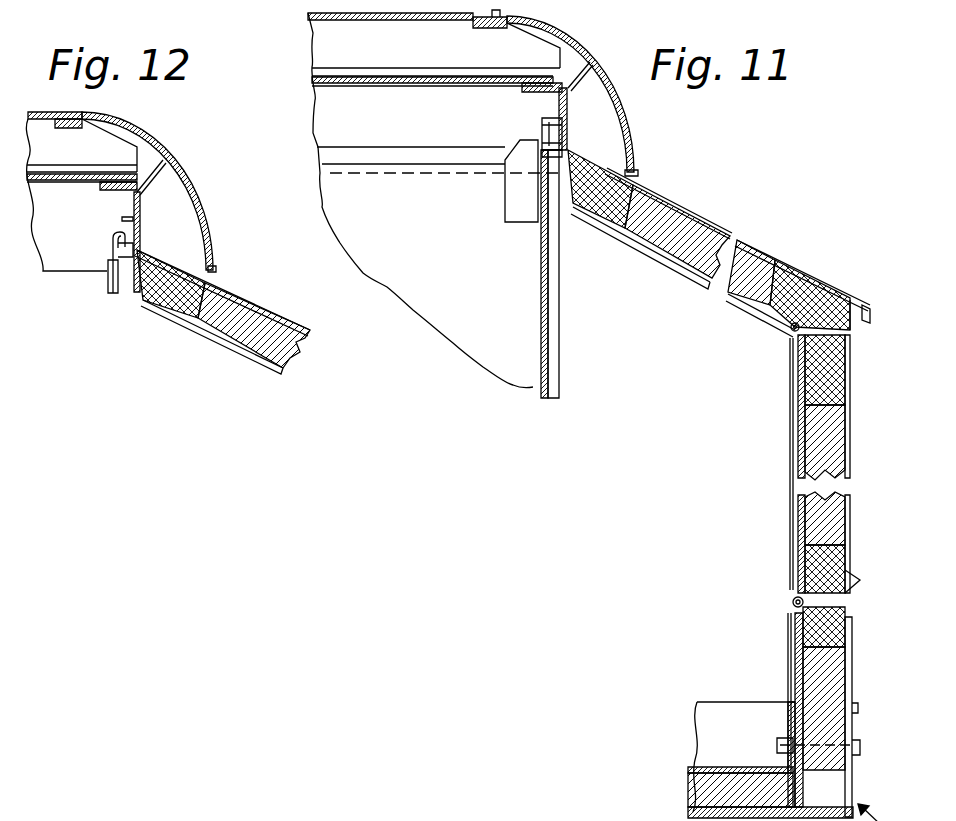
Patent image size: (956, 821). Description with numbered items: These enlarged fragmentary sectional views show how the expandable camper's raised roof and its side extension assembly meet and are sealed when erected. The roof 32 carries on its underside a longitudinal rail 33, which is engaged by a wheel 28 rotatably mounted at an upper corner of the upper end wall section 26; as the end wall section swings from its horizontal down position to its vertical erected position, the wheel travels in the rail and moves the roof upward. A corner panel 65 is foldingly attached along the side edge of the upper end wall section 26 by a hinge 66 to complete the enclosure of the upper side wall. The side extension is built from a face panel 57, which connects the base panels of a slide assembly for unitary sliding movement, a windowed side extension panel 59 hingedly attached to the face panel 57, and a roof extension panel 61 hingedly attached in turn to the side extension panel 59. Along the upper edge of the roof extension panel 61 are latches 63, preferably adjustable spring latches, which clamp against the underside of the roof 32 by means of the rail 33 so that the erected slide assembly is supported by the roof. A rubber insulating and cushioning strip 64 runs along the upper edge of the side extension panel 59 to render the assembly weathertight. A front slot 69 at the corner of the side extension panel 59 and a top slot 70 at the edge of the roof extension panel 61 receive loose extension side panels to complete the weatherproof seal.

In FIG. 11, the upper end wall section 26 is at (443, 313).
In FIG. 11, the wheel 28 is at (564, 127).
In FIG. 12, the roof 32 is at (56, 112).
In FIG. 11, the roof 32 is at (333, 22).
In FIG. 12, the longitudinal rail 33 is at (127, 217).
In FIG. 11, the longitudinal rail 33 is at (556, 114).
In FIG. 11, the face panel 57 is at (830, 678).
In FIG. 11, the windowed side extension panel 59 is at (830, 453).
In FIG. 12, the roof extension panel 61 is at (257, 312).
In FIG. 11, the roof extension panel 61 is at (695, 230).
In FIG. 12, the latch 63 is at (100, 291).
In FIG. 11, the rubber insulating and cushioning strip 64 is at (822, 333).
In FIG. 11, the corner panel 65 is at (550, 328).
In FIG. 11, the hinge 66 is at (542, 272).
In FIG. 11, the front slot 69 is at (790, 423).
In FIG. 11, the top slot 70 is at (693, 278).